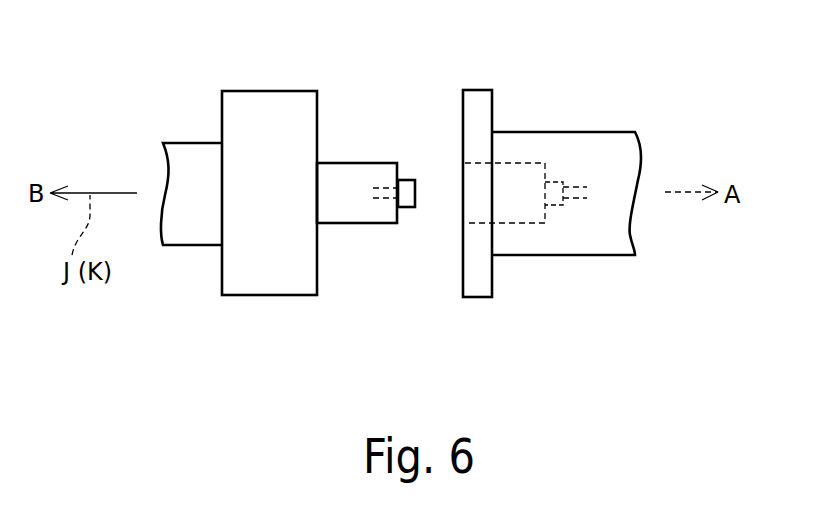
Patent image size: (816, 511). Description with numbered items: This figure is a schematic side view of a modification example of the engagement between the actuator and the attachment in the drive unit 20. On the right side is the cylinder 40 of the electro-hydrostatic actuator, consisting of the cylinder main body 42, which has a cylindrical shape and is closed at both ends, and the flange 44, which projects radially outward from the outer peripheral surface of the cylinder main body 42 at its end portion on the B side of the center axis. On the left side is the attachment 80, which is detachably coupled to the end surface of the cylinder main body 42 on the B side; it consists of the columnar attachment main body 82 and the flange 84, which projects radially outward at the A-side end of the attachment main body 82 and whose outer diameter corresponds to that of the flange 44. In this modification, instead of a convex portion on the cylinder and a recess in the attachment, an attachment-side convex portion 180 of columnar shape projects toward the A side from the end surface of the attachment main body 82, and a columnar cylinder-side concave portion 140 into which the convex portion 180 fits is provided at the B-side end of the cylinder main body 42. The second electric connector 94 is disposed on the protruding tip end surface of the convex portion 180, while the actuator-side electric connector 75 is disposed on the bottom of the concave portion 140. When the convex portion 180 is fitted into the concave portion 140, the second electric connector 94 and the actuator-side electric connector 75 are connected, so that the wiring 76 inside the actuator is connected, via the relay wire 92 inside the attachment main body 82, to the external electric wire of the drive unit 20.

The drive unit 20 is at (649, 68).
The cylinder 40 is at (570, 38).
The cylinder main body 42 is at (573, 143).
The flange 44 is at (480, 90).
The actuator-side electric connector 75 is at (557, 206).
The wiring 76 is at (572, 204).
The attachment 80 is at (285, 38).
The attachment main body 82 is at (192, 142).
The flange 84 is at (275, 91).
The relay wire 92 is at (388, 187).
The second electric connector 94 is at (407, 208).
The cylinder-side concave portion 140 is at (477, 221).
The attachment-side convex portion 180 is at (355, 163).